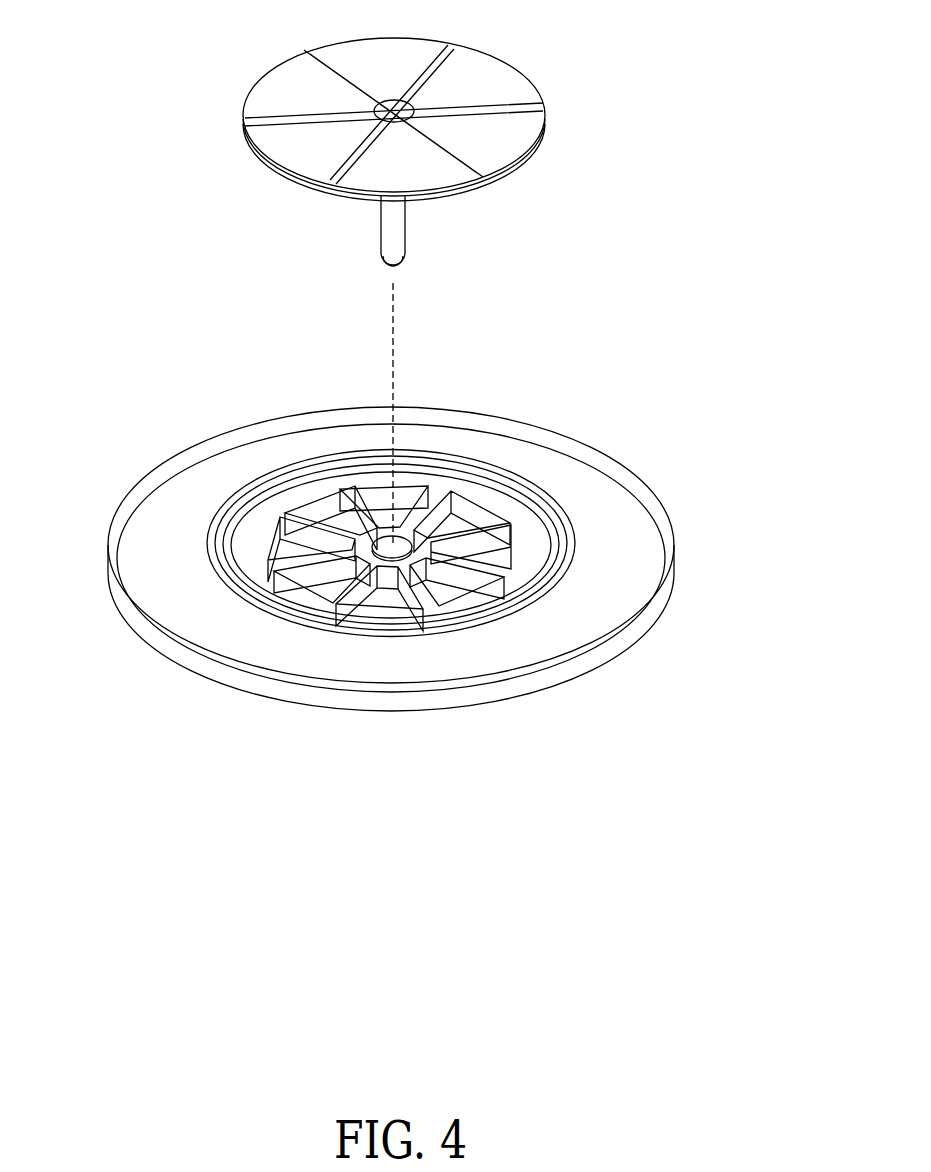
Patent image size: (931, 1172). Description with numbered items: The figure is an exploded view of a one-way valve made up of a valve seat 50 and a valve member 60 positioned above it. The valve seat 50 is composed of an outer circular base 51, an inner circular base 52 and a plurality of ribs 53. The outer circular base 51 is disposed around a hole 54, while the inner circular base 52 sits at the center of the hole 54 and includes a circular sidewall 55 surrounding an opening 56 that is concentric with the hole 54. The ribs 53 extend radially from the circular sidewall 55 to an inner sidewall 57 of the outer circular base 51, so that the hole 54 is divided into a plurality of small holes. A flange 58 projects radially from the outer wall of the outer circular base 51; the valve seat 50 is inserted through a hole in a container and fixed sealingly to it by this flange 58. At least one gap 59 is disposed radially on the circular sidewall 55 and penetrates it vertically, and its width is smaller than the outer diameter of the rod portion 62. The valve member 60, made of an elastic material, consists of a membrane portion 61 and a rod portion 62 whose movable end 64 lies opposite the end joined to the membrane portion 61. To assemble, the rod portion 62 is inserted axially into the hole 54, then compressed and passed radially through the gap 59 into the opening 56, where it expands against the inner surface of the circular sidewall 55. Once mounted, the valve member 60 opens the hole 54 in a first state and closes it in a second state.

The valve seat 50 is at (404, 555).
The outer circular base 51 is at (255, 522).
The inner circular base 52 is at (278, 556).
The ribs 53 is at (385, 576).
The hole 54 is at (386, 597).
The circular sidewall 55 is at (437, 580).
The opening 56 is at (397, 545).
The inner sidewall 57 is at (347, 495).
The flange 58 is at (652, 547).
The gap 59 is at (565, 512).
The valve member 60 is at (449, 142).
The membrane portion 61 is at (305, 72).
The rod portion 62 is at (392, 226).
The movable end 64 is at (395, 257).